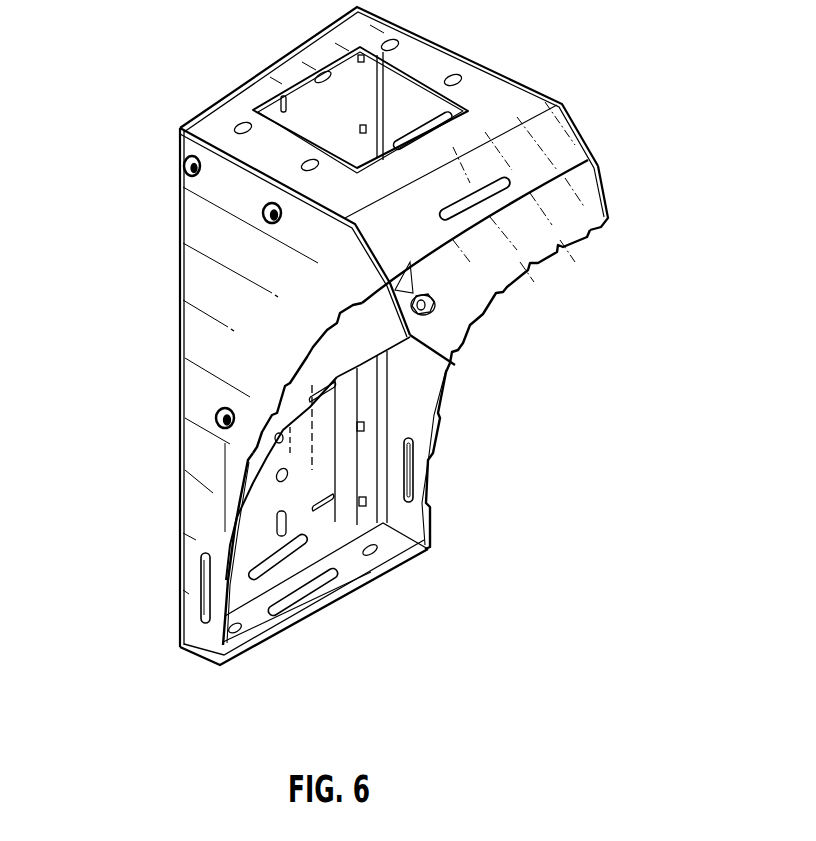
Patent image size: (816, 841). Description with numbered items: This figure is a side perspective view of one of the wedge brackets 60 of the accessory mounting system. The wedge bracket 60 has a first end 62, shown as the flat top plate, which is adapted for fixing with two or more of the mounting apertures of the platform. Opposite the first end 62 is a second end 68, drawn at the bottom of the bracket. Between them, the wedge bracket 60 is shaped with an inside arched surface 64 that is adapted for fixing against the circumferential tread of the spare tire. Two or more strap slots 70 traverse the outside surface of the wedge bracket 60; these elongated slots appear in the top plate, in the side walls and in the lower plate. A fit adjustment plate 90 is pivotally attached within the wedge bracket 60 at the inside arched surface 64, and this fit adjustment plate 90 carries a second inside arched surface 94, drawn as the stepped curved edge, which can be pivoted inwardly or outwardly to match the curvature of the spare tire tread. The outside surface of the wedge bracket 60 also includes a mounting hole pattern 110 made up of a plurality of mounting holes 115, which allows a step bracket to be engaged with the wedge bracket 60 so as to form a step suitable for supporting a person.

The wedge bracket 60 is at (136, 397).
The first end 62 is at (217, 127).
The inside arched surface 64 is at (443, 430).
The second end 68 is at (208, 640).
The strap slots 70 is at (460, 127).
The fit adjustment plate 90 is at (373, 326).
The second inside arched surface 94 is at (497, 312).
The mounting hole pattern 110 is at (307, 450).
The mounting holes 115 is at (283, 537).